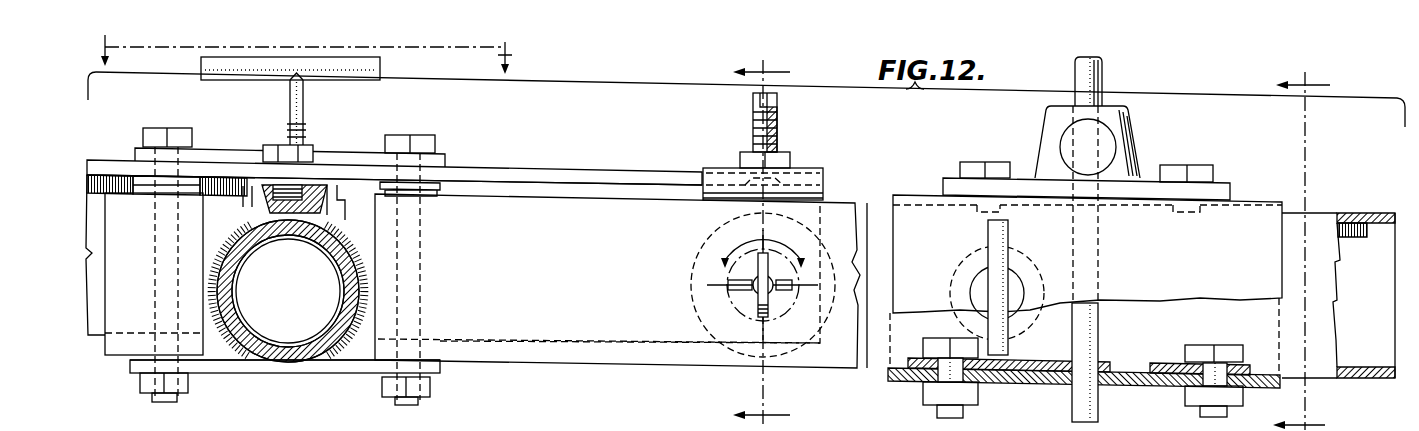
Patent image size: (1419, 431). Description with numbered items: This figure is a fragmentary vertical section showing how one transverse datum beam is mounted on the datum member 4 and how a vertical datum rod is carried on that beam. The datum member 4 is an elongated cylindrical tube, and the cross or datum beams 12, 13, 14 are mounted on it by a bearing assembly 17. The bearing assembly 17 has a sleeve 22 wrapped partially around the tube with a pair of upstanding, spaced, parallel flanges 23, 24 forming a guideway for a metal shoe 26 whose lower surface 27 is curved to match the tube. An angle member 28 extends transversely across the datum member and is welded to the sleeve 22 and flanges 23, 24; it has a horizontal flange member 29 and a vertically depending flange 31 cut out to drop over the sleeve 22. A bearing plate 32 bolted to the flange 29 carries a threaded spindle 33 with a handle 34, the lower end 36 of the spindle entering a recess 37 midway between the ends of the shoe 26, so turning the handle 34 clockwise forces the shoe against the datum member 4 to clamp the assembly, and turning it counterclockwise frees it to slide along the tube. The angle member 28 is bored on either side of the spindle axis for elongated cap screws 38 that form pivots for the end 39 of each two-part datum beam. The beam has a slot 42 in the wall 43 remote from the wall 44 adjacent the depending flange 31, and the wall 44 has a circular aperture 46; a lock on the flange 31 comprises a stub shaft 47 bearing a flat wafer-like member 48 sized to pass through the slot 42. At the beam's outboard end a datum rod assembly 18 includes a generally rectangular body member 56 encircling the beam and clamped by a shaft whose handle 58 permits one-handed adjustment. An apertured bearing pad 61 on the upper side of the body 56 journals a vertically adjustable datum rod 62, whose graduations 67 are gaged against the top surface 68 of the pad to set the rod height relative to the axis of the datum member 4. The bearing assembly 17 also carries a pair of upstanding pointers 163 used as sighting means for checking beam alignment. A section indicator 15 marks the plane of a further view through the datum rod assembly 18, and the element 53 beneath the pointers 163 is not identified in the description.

The datum member 4 is at (258, 345).
The datum beam 12 is at (118, 364).
The datum beam 13 is at (311, 54).
The datum beam 14 is at (761, 234).
The section line 15- 15 is at (1301, 240).
The bearing assembly 17 is at (463, 158).
The datum rod assembly 18 is at (1182, 152).
The sleeve 22 is at (330, 346).
The flange 23 is at (237, 210).
The flange 24 is at (338, 212).
The shoe 26 is at (265, 222).
The lower surface 27 is at (300, 233).
The angle member 28 is at (606, 165).
The horizontal flange member 29 is at (530, 177).
The vertically depending flange 31 is at (558, 345).
The bearing plate 32 is at (137, 157).
The spindle 33 is at (303, 100).
The handle 34 is at (380, 72).
The lower end 36 is at (273, 186).
The recess 37 is at (323, 185).
The cap screws 38 is at (155, 137).
The end 39 is at (116, 283).
The slot 42 is at (748, 288).
The wall 43 is at (1318, 225).
The wall 44 is at (1365, 232).
The circular aperture 46 is at (771, 285).
The stub shaft 47 is at (755, 300).
The wafer-like member 48 is at (777, 300).
The bearing block 53 is at (713, 203).
The body member 56 is at (905, 222).
The handle 58 is at (986, 240).
The bearing pad 61 is at (1105, 145).
The datum rod 62 is at (1095, 80).
The graduations 67 is at (1072, 405).
The top surface 68 is at (1120, 106).
The pointers 163 is at (777, 124).